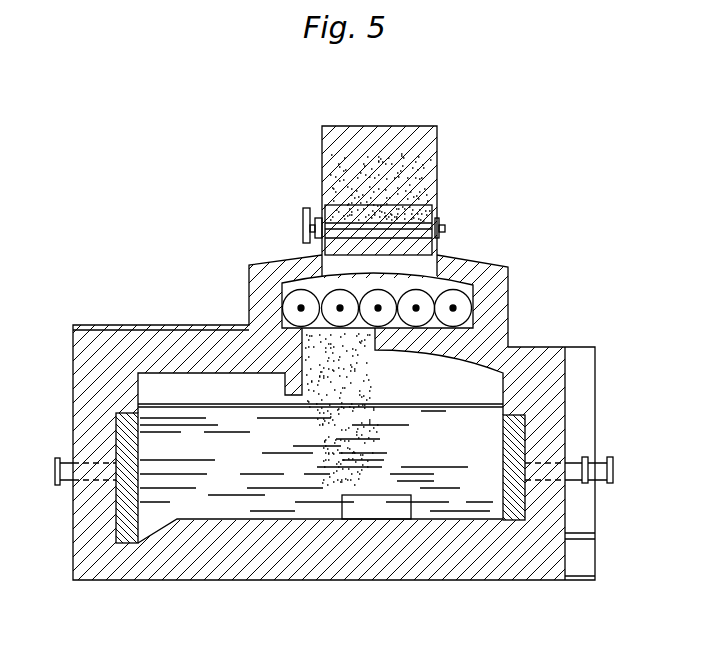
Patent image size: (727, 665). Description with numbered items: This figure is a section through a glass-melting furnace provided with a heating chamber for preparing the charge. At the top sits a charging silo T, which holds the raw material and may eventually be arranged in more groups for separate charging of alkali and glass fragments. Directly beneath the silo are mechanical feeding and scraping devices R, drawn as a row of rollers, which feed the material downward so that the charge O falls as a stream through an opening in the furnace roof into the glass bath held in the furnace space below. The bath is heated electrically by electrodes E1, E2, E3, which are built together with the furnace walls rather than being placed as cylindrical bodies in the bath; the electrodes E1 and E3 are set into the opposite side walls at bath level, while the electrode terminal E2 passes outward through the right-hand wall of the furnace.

The charging silo T is at (433, 172).
The mechanical feeding and scraping device R is at (466, 313).
The charge O is at (360, 375).
The electrode E1 is at (127, 436).
The electrode E2 is at (613, 478).
The electrode E3 is at (519, 437).